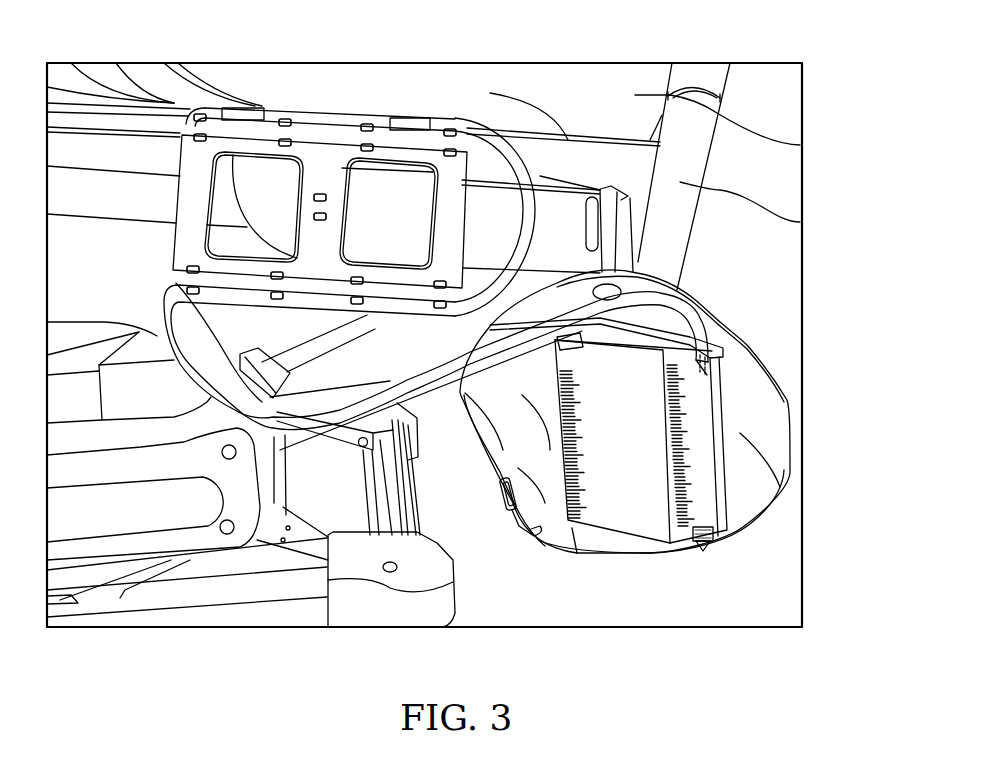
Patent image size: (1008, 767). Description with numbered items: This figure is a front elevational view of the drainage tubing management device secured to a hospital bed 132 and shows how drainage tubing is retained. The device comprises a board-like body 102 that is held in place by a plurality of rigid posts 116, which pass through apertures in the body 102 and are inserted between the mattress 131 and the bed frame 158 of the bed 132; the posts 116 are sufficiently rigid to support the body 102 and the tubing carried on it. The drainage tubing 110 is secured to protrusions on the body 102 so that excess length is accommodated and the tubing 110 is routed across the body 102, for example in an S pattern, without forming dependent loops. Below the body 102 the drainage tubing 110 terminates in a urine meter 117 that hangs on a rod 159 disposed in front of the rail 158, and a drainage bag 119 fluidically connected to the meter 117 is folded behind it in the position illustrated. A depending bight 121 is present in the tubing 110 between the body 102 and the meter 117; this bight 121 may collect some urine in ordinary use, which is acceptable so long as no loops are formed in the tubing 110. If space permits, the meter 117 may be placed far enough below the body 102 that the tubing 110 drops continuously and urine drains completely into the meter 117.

The body 102 is at (192, 207).
The drainage tubing 110 is at (414, 386).
The posts 116 is at (227, 112).
The urine meter 117 is at (687, 497).
The drainage bag 119 is at (572, 528).
The depending bight 121 is at (282, 428).
The mattress 131 is at (800, 145).
The bed 132 is at (800, 222).
The bed frame 158 is at (620, 173).
The rod 159 is at (575, 183).